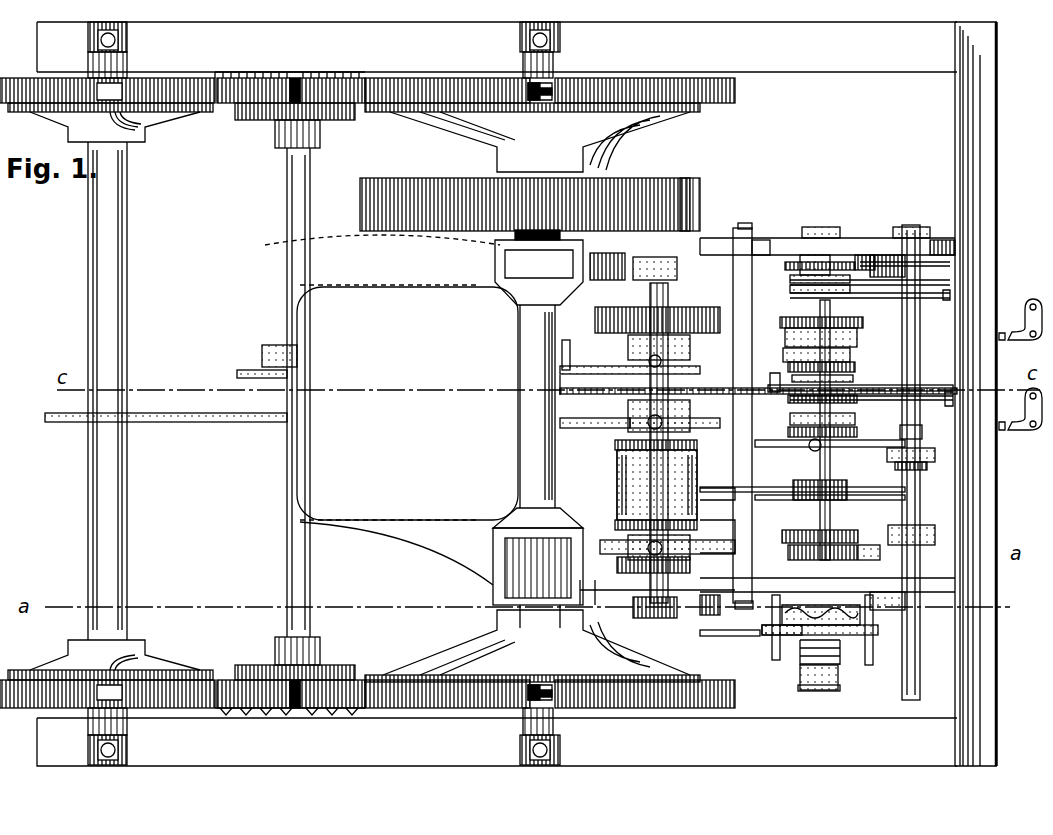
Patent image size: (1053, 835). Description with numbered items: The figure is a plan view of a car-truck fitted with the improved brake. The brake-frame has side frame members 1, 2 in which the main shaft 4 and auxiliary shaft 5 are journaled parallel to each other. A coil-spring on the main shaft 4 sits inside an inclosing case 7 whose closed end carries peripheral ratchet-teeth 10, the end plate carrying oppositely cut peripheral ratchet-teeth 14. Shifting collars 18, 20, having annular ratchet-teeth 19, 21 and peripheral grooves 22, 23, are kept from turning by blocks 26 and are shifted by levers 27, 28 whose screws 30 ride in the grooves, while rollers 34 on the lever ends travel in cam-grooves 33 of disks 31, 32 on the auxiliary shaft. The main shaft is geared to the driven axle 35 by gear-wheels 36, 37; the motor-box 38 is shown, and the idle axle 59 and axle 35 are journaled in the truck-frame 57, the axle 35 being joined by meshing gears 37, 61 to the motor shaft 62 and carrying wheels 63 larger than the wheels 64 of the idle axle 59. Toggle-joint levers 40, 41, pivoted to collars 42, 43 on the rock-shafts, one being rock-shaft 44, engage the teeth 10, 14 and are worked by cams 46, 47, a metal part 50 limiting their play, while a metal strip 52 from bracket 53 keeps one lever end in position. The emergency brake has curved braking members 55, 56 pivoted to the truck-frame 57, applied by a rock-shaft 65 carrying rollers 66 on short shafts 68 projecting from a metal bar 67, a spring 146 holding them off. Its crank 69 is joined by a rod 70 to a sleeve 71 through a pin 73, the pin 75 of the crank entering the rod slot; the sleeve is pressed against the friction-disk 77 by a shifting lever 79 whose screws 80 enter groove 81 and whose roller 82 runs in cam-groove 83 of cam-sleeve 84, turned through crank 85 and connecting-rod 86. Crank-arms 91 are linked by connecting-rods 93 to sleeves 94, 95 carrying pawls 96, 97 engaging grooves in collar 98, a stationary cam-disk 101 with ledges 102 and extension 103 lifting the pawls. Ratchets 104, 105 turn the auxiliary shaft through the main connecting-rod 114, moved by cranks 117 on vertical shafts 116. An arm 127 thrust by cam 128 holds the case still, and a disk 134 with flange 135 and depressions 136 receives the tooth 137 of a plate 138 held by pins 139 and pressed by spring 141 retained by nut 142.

The side frame member 1 is at (855, 240).
The side frame member 2 is at (882, 600).
The main shaft 4 is at (770, 648).
The auxiliary shaft 5 is at (823, 240).
The inclosing case 7 is at (630, 487).
The peripheral series of ratchet-teeth 10 is at (612, 446).
The peripheral series of ratchet-teeth 14 is at (650, 550).
The shifting collar 18 is at (648, 420).
The annular series of ratchet-teeth 19 is at (625, 418).
The shifting collar 20 is at (628, 565).
The annular series of ratchet-teeth 21 is at (578, 540).
The peripheral groove 22 is at (650, 358).
The peripheral groove 23 is at (652, 605).
The blocks 26 is at (692, 408).
The lever 27 is at (802, 475).
The lever 28 is at (712, 495).
The screws or bolts 30 is at (662, 395).
The disk or wheel 31 is at (858, 405).
The disk or wheel 32 is at (862, 530).
The peripheral cam-groove 33 is at (830, 420).
The rollers 34 is at (810, 450).
The axle 35 is at (535, 345).
The gear-wheel 36 is at (700, 200).
The gear-wheel 37 is at (538, 205).
The motor-box 38 is at (407, 435).
The toggle-joint lever 40 is at (830, 462).
The toggle-joint lever 41 is at (830, 506).
The collar 42 is at (915, 470).
The collar 43 is at (935, 535).
The rock-shaft 44 is at (962, 557).
The cam 46 is at (905, 432).
The cam 47 is at (887, 592).
The metal part 50 is at (790, 418).
The metal strip 52 is at (660, 455).
The bracket 53 is at (758, 252).
The curved braking member 55 is at (430, 95).
The curved braking member 56 is at (648, 92).
The frame of the car-truck 57 is at (497, 394).
The idle axle 59 is at (110, 522).
The gear 61 is at (385, 200).
The shaft of the motor 62 is at (300, 240).
The wheels 63 is at (490, 132).
The wheels 64 is at (128, 130).
The rock-shaft 65 is at (290, 520).
The offset rollers 66 is at (242, 90).
The metal bar 67 is at (285, 122).
The short shafts 68 is at (245, 122).
The crank 69 is at (268, 352).
The rod 70 is at (574, 349).
The sleeve 71 is at (563, 378).
The pin 73 is at (563, 370).
The pin 75 is at (287, 378).
The friction-disk 77 is at (680, 320).
The shifting lever 79 is at (742, 260).
The screws 80 is at (670, 257).
The peripheral groove 81 is at (628, 257).
The roller 82 is at (830, 362).
The cam-groove 83 is at (947, 296).
The cam-sleeve 84 is at (943, 283).
The crank 85 is at (1020, 319).
The connecting-rod 86 is at (925, 462).
The crank-arm 91 is at (948, 238).
The connecting-rods 93 is at (882, 240).
The disk or sleeve 94 is at (810, 258).
The disk or sleeve 95 is at (940, 263).
The pawl 96 is at (857, 247).
The pawl 97 is at (800, 320).
The collar 98 is at (730, 255).
The cam-disk 101 is at (800, 262).
The ledges 102 is at (832, 263).
The extension 103 is at (900, 233).
The ratchet 104 is at (788, 355).
The ratchet 105 is at (935, 398).
The main connecting-rod 114 is at (150, 412).
The vertical shaft 116 is at (1023, 409).
The crank 117 is at (1027, 410).
The arm 127 is at (643, 523).
The cam 128 is at (833, 533).
The disk 134 is at (860, 612).
The lateral flange 135 is at (800, 630).
The curved depressions 136 is at (855, 655).
The rounded tooth 137 is at (832, 662).
The plate 138 is at (805, 680).
The pins 139 is at (700, 637).
The spiral spring 141 is at (818, 617).
The washer or nut 142 is at (800, 688).
The spring 146 is at (290, 78).